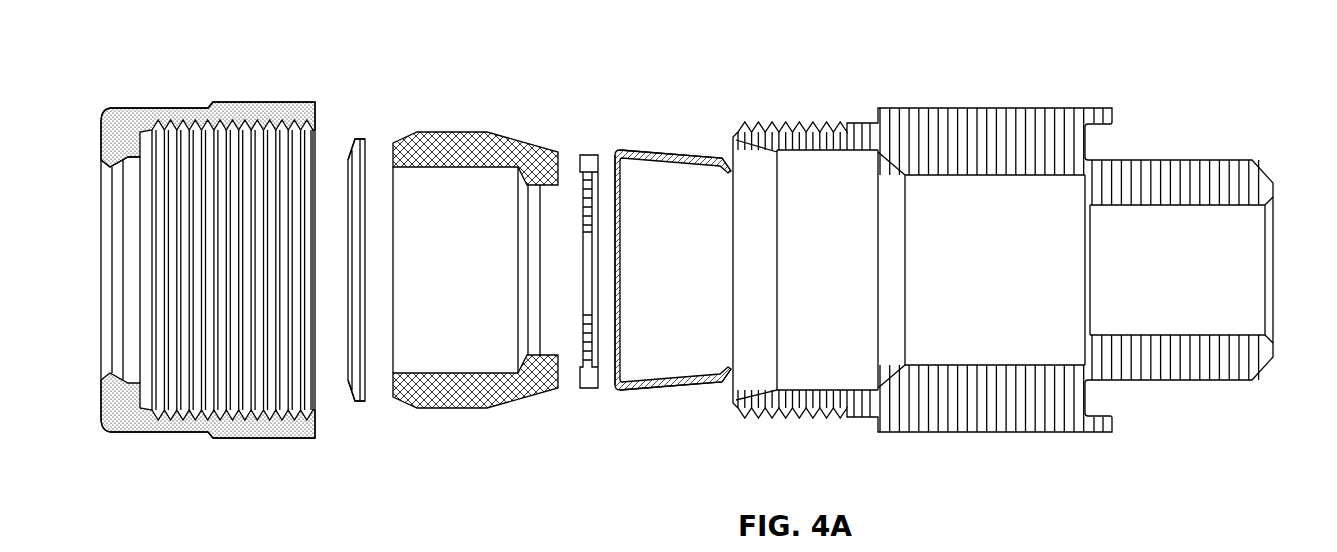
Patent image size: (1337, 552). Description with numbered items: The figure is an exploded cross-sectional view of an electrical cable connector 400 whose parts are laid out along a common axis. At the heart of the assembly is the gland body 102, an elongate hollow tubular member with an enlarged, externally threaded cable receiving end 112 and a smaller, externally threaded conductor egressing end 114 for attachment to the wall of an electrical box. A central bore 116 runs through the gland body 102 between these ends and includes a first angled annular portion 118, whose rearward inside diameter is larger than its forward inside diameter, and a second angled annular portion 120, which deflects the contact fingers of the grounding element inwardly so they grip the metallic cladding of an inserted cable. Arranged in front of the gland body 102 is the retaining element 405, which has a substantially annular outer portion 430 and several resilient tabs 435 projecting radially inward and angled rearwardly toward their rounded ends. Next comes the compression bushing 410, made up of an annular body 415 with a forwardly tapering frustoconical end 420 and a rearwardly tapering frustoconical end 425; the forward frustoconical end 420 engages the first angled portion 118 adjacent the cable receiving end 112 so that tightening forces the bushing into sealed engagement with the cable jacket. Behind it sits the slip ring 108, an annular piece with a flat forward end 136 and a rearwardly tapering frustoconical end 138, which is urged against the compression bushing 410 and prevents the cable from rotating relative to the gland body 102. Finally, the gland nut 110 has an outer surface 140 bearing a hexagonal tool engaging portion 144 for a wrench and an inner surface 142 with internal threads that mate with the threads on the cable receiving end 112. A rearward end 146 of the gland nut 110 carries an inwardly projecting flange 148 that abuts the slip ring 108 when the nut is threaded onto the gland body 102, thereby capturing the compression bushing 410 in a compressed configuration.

The electrical cable connector 400 is at (988, 242).
The gland body 102 is at (1145, 118).
The slip ring 108 is at (368, 244).
The gland nut 110 is at (216, 271).
The cable receiving end 112 is at (841, 396).
The conductor egressing end 114 is at (1198, 352).
The central bore 116 is at (1136, 270).
The first angled annular portion 118 is at (760, 392).
The second angled annular portion 120 is at (890, 166).
The flat forward end 136 is at (352, 135).
The frustoconical end 138 is at (360, 375).
The outer surface 140 is at (216, 86).
The inner surface 142 is at (303, 388).
The hexagonal tool engaging portion 144 is at (245, 436).
The rearward end 146 is at (147, 111).
The flange 148 is at (113, 130).
The retaining element 405 is at (638, 325).
The compression bushing 410 is at (488, 287).
The annular body 415 is at (500, 400).
The forward frustoconical end 420 is at (530, 140).
The rearward frustoconical end 425 is at (410, 170).
The annular outer portion 430 is at (597, 241).
The resilient tabs 435 is at (581, 208).